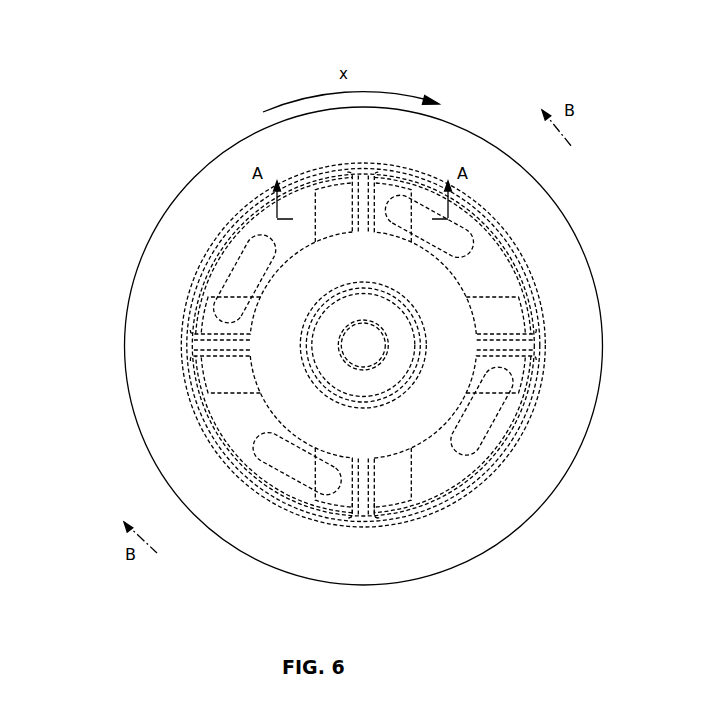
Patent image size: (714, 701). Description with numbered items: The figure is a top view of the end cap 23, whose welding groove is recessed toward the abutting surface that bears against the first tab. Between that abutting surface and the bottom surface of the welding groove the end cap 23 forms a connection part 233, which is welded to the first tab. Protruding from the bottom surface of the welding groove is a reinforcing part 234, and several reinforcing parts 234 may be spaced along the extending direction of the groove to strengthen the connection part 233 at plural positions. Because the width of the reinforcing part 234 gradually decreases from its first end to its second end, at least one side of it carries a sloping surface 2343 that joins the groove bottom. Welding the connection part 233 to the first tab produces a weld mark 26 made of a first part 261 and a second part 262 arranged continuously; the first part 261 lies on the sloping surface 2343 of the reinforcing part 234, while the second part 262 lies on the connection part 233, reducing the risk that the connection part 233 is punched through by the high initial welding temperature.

The end cap 23 is at (358, 28).
The connection part 233 is at (243, 428).
The reinforcing part 234 is at (362, 500).
The sloping surface 2343 is at (341, 505).
The weld mark 26 is at (190, 281).
The first part 261 is at (193, 322).
The second part 262 is at (245, 266).